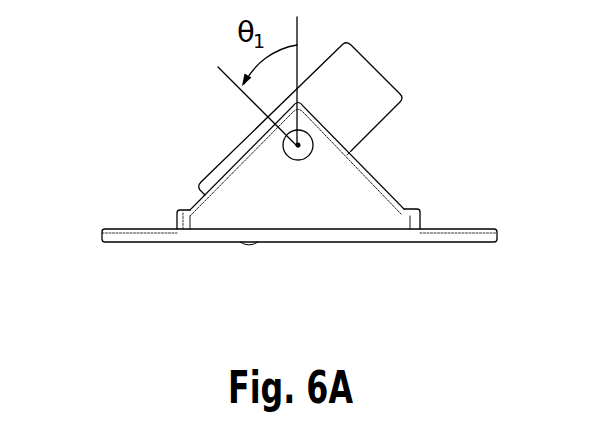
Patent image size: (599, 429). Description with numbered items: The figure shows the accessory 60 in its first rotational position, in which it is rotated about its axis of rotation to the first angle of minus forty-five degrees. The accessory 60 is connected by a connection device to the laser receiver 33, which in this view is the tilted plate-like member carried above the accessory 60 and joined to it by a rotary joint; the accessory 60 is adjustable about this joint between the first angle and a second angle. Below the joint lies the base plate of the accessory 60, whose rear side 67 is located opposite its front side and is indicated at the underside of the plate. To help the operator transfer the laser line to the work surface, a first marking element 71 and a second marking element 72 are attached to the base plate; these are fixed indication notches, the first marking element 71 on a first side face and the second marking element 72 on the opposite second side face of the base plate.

The laser receiver 33 is at (375, 97).
The accessory 60 is at (140, 197).
The rear side 67 is at (300, 243).
The first marking element 71 is at (127, 243).
The second marking element 72 is at (464, 243).